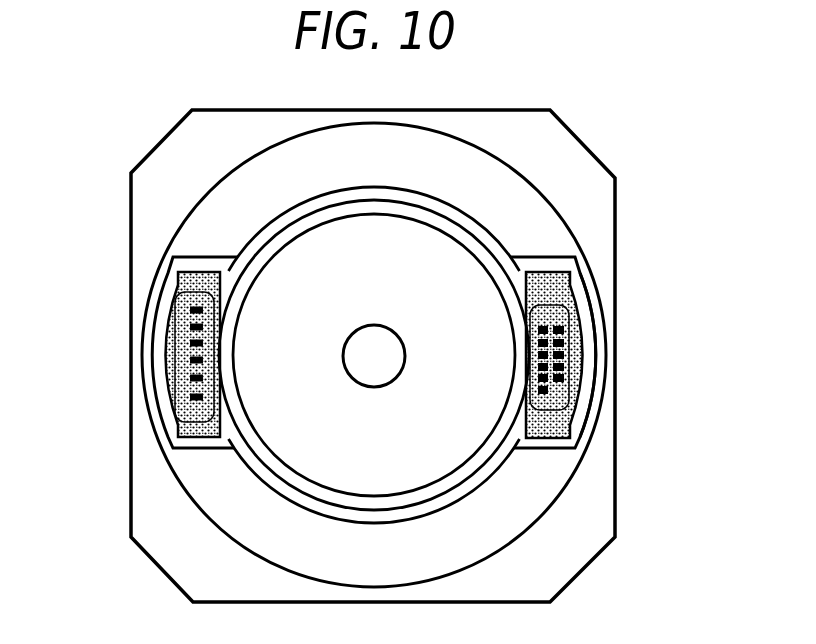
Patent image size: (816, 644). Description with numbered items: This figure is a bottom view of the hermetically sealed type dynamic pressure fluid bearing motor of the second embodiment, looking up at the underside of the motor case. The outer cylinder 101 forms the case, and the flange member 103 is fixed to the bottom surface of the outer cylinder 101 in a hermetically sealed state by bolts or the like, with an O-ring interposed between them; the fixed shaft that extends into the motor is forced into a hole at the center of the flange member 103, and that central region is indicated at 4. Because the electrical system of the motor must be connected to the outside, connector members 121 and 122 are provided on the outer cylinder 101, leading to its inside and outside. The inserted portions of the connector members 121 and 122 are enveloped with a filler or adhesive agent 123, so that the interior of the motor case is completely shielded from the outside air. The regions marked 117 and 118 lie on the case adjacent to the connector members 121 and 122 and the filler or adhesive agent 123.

The outer cylinder 101 is at (565, 127).
The flange member 103 is at (460, 255).
The shaft hole 4 is at (369, 363).
The stator core 117 is at (165, 268).
The stator core yoke 118 is at (587, 358).
The connector member 121 is at (192, 327).
The connector member 122 is at (548, 343).
The filler or adhesive agent 123 is at (178, 433).